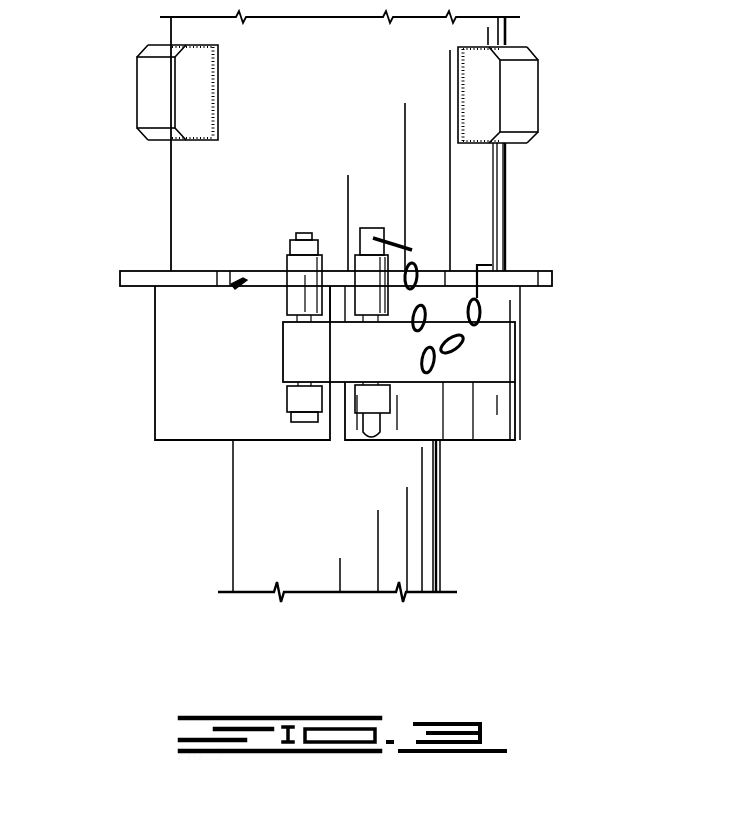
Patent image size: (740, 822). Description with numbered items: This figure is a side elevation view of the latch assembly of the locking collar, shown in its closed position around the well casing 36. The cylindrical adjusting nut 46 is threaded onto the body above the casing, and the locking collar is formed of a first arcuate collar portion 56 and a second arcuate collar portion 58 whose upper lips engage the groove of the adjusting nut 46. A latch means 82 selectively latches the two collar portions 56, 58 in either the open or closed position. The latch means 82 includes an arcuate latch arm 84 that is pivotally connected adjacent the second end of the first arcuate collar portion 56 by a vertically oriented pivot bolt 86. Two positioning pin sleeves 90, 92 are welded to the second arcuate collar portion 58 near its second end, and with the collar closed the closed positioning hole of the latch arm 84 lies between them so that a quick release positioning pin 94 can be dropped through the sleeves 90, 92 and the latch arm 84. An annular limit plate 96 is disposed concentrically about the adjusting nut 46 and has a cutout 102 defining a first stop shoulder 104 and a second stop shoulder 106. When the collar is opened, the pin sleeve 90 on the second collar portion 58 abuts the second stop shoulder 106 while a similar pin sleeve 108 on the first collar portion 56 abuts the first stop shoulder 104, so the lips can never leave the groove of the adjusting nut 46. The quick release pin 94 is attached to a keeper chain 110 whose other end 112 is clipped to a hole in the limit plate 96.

The casing 36 is at (247, 518).
The cylindrical adjusting nut 46 is at (190, 196).
The first arcuate collar portion 56 is at (165, 401).
The second arcuate collar portion 58 is at (488, 417).
The latch means 82 is at (522, 215).
The arcuate latch arm 84 is at (478, 358).
The pivot bolt 86 is at (302, 233).
The positioning pin sleeve 90 is at (362, 265).
The positioning pin sleeve 92 is at (370, 398).
The quick release positioning pin 94 is at (364, 232).
The limit plate 96 is at (128, 277).
The cutout 102 is at (240, 283).
The first stop shoulder 104 is at (222, 285).
The second stop shoulder 106 is at (452, 272).
The pin sleeve 108 is at (293, 258).
The keeper chain 110 is at (412, 262).
The other end of keeper chain 112 is at (500, 260).